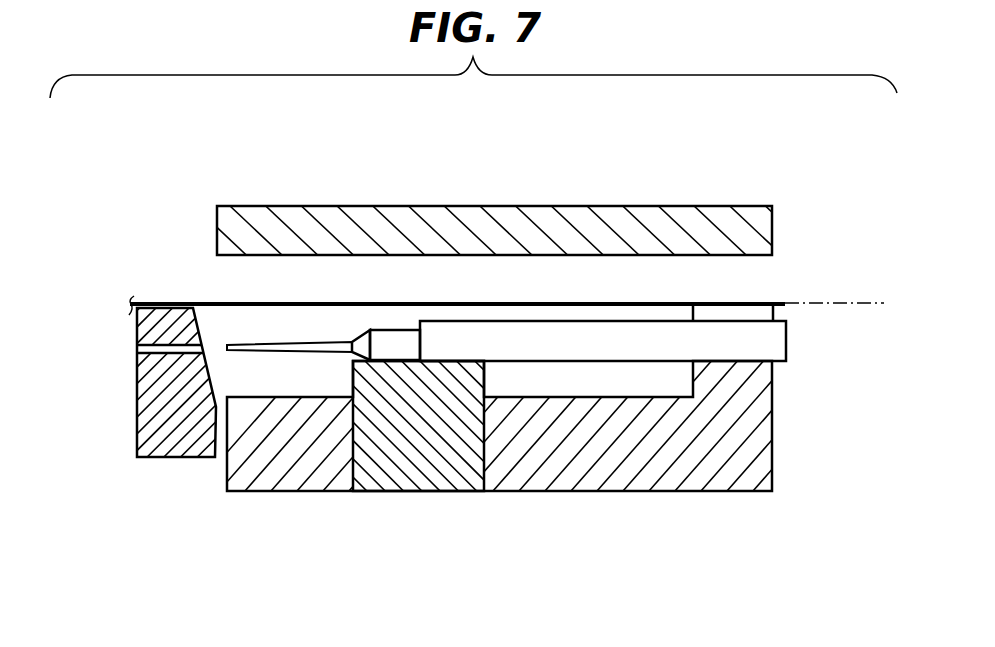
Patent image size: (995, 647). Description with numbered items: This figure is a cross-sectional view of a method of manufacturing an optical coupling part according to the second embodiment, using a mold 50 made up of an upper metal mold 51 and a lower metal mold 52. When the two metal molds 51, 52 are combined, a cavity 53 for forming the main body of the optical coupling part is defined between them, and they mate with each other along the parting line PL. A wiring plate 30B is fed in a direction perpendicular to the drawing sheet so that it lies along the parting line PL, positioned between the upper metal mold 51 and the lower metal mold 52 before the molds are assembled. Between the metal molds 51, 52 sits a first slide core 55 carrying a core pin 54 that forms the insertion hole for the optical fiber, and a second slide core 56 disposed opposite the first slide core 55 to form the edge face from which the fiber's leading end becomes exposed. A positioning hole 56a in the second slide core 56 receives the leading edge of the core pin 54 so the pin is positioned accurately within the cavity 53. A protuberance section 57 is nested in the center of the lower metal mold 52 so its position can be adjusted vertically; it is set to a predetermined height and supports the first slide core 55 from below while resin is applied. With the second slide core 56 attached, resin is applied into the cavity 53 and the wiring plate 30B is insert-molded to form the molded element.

The mold 50 is at (261, 191).
The upper metal mold 51 is at (684, 202).
The wiring plate 30B is at (748, 298).
The parting line PL is at (864, 306).
The lower metal mold 52 is at (737, 496).
The cavity 53 is at (590, 397).
The core pin 54 is at (292, 350).
The first slide core 55 is at (660, 367).
The second slide core 56 is at (175, 462).
The positioning hole 56a is at (137, 348).
The protuberance section 57 is at (423, 453).